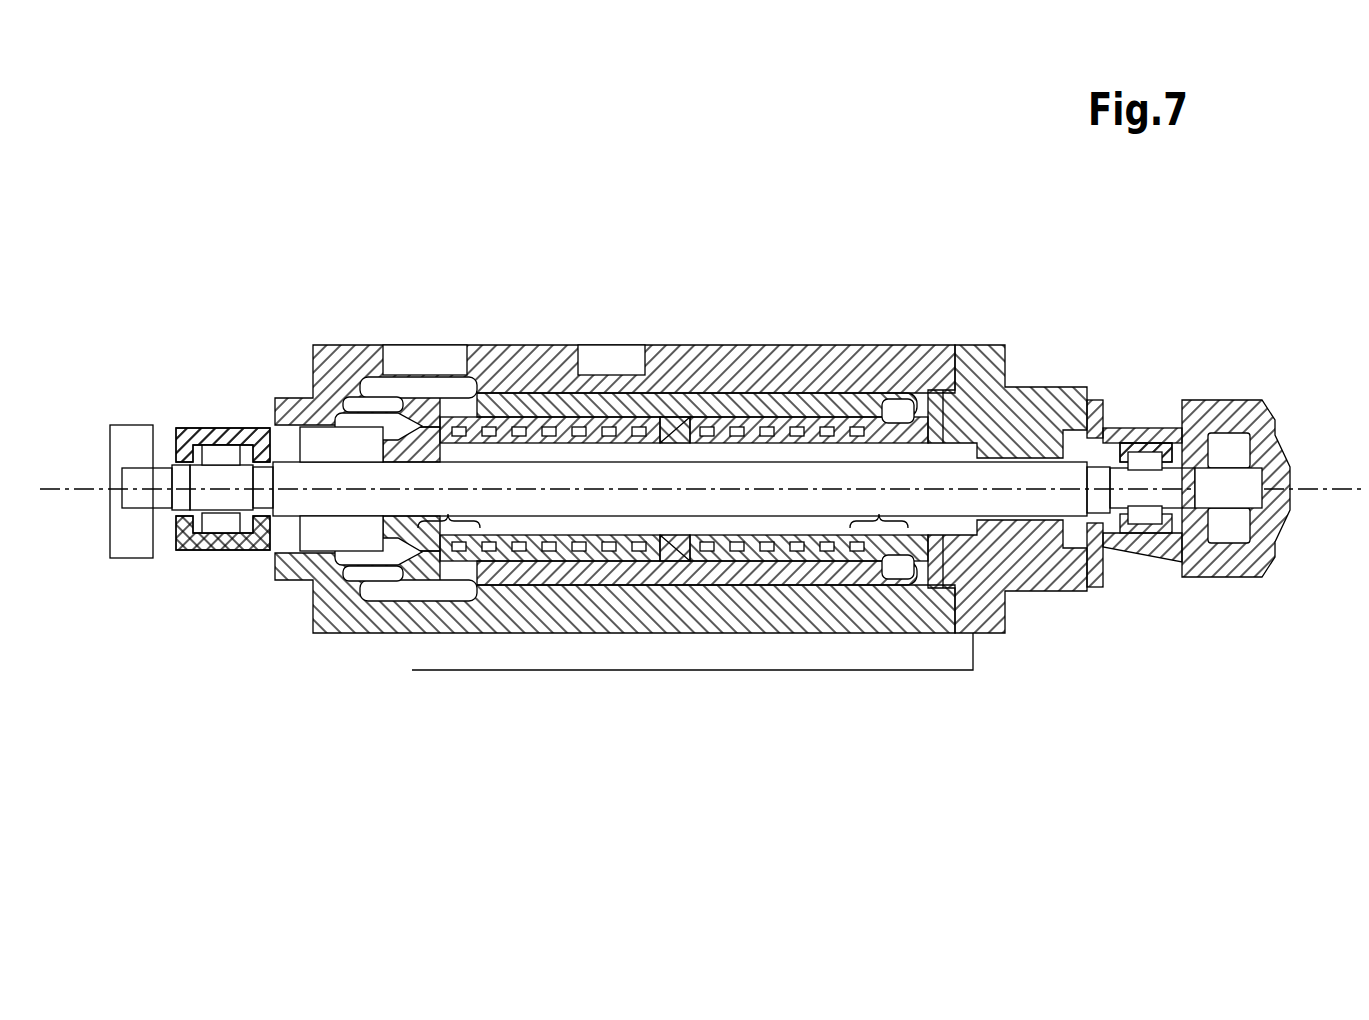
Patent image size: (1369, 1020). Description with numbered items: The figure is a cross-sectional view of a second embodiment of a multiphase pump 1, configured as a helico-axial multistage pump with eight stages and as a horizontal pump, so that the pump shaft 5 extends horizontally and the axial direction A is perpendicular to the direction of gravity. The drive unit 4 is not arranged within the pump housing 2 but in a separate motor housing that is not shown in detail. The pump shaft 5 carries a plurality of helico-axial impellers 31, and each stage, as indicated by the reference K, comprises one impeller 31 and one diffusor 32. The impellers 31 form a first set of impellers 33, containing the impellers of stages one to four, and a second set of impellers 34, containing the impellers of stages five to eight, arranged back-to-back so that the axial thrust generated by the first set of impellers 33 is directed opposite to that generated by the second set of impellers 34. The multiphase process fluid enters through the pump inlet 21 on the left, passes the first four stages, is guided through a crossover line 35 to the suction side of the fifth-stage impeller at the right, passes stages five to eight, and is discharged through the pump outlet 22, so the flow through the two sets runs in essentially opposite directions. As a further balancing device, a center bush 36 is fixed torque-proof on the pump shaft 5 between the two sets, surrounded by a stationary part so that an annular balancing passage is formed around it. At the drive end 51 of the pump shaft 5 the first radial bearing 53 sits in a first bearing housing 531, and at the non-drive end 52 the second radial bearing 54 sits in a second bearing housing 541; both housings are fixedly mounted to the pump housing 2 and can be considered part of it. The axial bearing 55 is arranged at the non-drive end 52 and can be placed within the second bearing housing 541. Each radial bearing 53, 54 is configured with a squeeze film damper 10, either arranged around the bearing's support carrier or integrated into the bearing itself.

The multiphase pump 1 is at (975, 237).
The pump housing 2 is at (826, 345).
The pump inlet 21 is at (412, 353).
The pump outlet 22 is at (620, 355).
The impeller 31 is at (410, 563).
The diffusor 32 is at (447, 578).
The first set of impellers 33 is at (647, 718).
The second set of impellers 34 is at (688, 718).
The crossover line 35 is at (768, 393).
The center bush 36 is at (697, 393).
The drive unit 4 is at (130, 560).
The pump shaft 5 is at (932, 460).
The drive end 51 is at (174, 512).
The non-drive end 52 is at (1255, 485).
The first radial bearing 53 is at (213, 412).
The first bearing housing 531 is at (220, 550).
The second radial bearing 54 is at (1141, 405).
The second bearing housing 541 is at (1140, 563).
The axial bearing 55 is at (1234, 392).
The squeeze film damper 10 is at (674, 445).
The axial direction A is at (87, 489).
The stage K is at (663, 500).